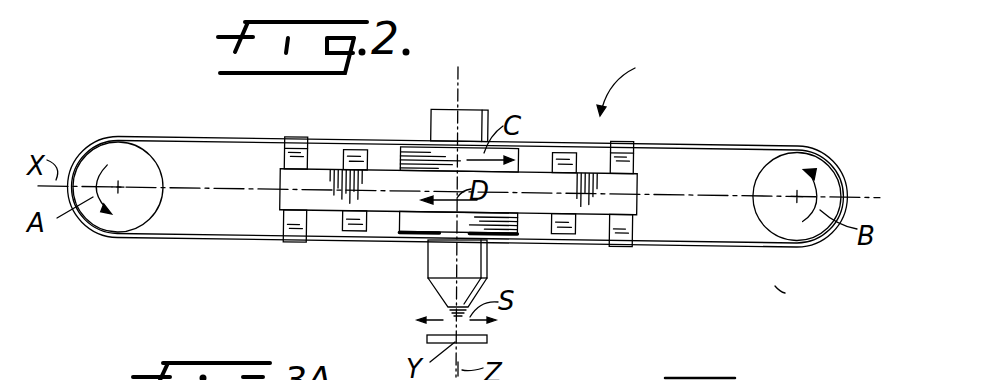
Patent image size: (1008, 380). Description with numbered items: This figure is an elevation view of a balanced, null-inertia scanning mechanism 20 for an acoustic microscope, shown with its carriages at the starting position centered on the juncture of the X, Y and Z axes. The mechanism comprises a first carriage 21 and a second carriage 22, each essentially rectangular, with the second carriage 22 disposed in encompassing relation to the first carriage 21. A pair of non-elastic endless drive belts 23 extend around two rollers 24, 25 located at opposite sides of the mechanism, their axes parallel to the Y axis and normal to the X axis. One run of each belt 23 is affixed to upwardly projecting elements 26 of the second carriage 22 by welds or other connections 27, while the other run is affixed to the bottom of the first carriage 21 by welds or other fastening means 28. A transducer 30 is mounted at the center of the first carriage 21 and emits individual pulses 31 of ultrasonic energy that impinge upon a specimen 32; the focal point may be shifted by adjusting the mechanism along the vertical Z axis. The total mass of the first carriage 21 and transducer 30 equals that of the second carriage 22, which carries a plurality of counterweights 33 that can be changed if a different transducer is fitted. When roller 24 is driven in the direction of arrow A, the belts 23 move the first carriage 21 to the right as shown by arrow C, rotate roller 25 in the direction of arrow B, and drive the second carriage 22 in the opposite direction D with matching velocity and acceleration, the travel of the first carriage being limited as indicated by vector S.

The scanning mechanism 20 is at (636, 84).
The first carriage 21 is at (415, 152).
The second carriage 22 is at (281, 196).
The endless drive belts 23 is at (222, 139).
The roller 24 is at (128, 152).
The roller 25 is at (790, 157).
The upwardly projecting elements 26 is at (297, 135).
The welds or other connections 27 is at (283, 147).
The welds or other fastening means 28 is at (407, 243).
The transducer 30 is at (468, 108).
The pulses of ultrasonic energy 31 is at (447, 313).
The specimen 32 is at (490, 340).
The counterweights 33 is at (358, 230).